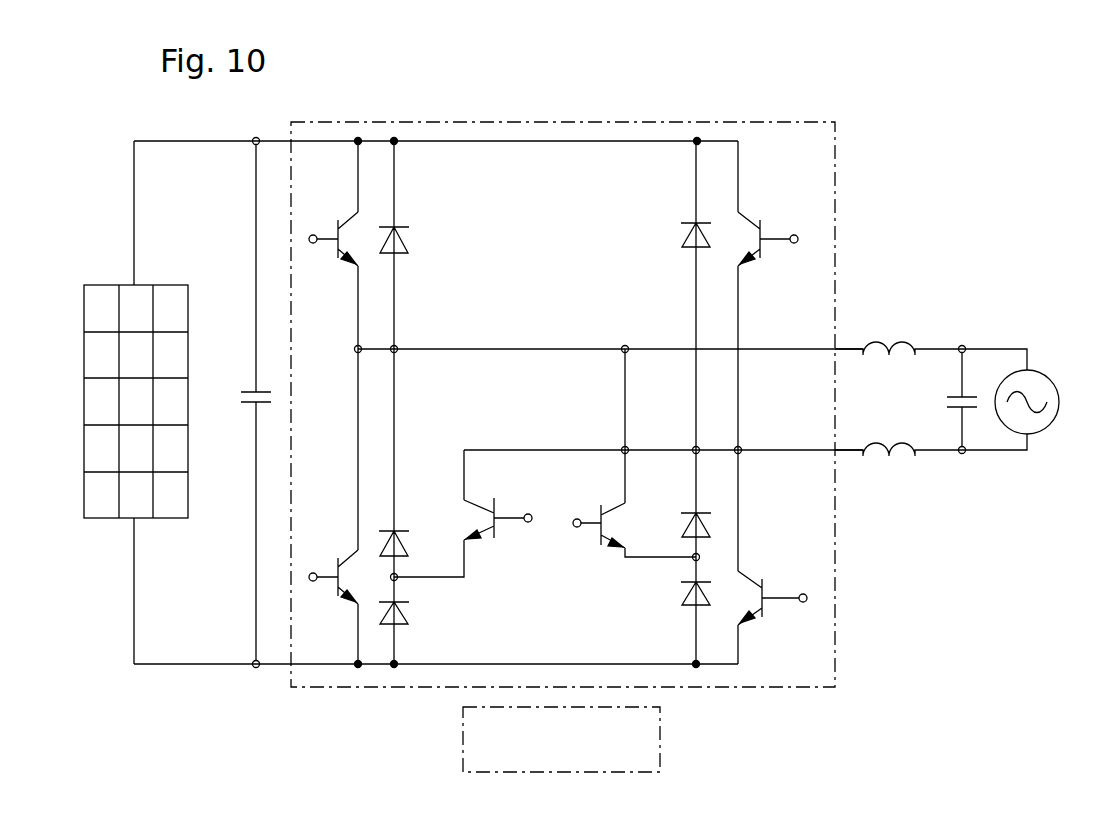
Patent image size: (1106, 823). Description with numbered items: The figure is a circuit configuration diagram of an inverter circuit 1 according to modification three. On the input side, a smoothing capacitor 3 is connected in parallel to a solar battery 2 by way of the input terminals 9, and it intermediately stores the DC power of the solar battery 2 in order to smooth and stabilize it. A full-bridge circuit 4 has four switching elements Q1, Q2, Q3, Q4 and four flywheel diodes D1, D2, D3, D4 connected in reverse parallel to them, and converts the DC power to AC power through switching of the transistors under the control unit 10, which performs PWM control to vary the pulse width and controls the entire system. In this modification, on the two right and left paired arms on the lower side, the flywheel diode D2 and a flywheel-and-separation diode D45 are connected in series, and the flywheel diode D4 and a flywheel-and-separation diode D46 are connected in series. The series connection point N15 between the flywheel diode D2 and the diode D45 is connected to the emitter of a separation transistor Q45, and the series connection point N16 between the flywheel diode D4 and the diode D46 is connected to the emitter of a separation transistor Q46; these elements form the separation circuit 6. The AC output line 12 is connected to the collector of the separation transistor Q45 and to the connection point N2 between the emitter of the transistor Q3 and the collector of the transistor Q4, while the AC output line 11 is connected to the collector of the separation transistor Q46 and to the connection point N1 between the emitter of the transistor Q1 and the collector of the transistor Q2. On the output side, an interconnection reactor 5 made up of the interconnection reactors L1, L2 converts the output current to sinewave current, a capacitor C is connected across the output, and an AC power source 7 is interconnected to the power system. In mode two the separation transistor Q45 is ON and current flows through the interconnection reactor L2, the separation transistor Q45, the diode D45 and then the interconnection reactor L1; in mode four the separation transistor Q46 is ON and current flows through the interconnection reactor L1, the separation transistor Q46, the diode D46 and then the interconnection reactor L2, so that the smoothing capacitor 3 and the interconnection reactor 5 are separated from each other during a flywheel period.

The inverter circuit 1 is at (725, 122).
The solar battery 2 is at (113, 283).
The smoothing capacitor 3 is at (252, 388).
The bridge circuit 4 is at (558, 362).
The interconnection reactor 5 is at (906, 383).
The separation circuit 6 is at (545, 482).
The AC power source 7 is at (1045, 368).
The DC input terminals 9 is at (272, 138).
The control unit 10 is at (664, 738).
The AC output line 11 is at (766, 348).
The AC output line 12 is at (764, 448).
The switching element Q1 is at (333, 246).
The switching element Q2 is at (333, 506).
The switching element Q3 is at (768, 295).
The switching element Q4 is at (772, 557).
The separation transistor Q45 is at (463, 513).
The separation transistor Q46 is at (628, 503).
The flywheel diode D1 is at (412, 246).
The flywheel diode D2 is at (414, 620).
The flywheel diode D3 is at (673, 297).
The flywheel diode D4 is at (674, 610).
The flywheel-and-separation diode D45 is at (419, 463).
The flywheel-and-separation diode D46 is at (670, 503).
The connection point N1 is at (356, 349).
The connection point N2 is at (737, 463).
The series connection point N15 is at (397, 580).
The series connection point N16 is at (693, 560).
The interconnection reactor L1 is at (898, 331).
The interconnection reactor L2 is at (898, 468).
The capacitor C is at (950, 400).